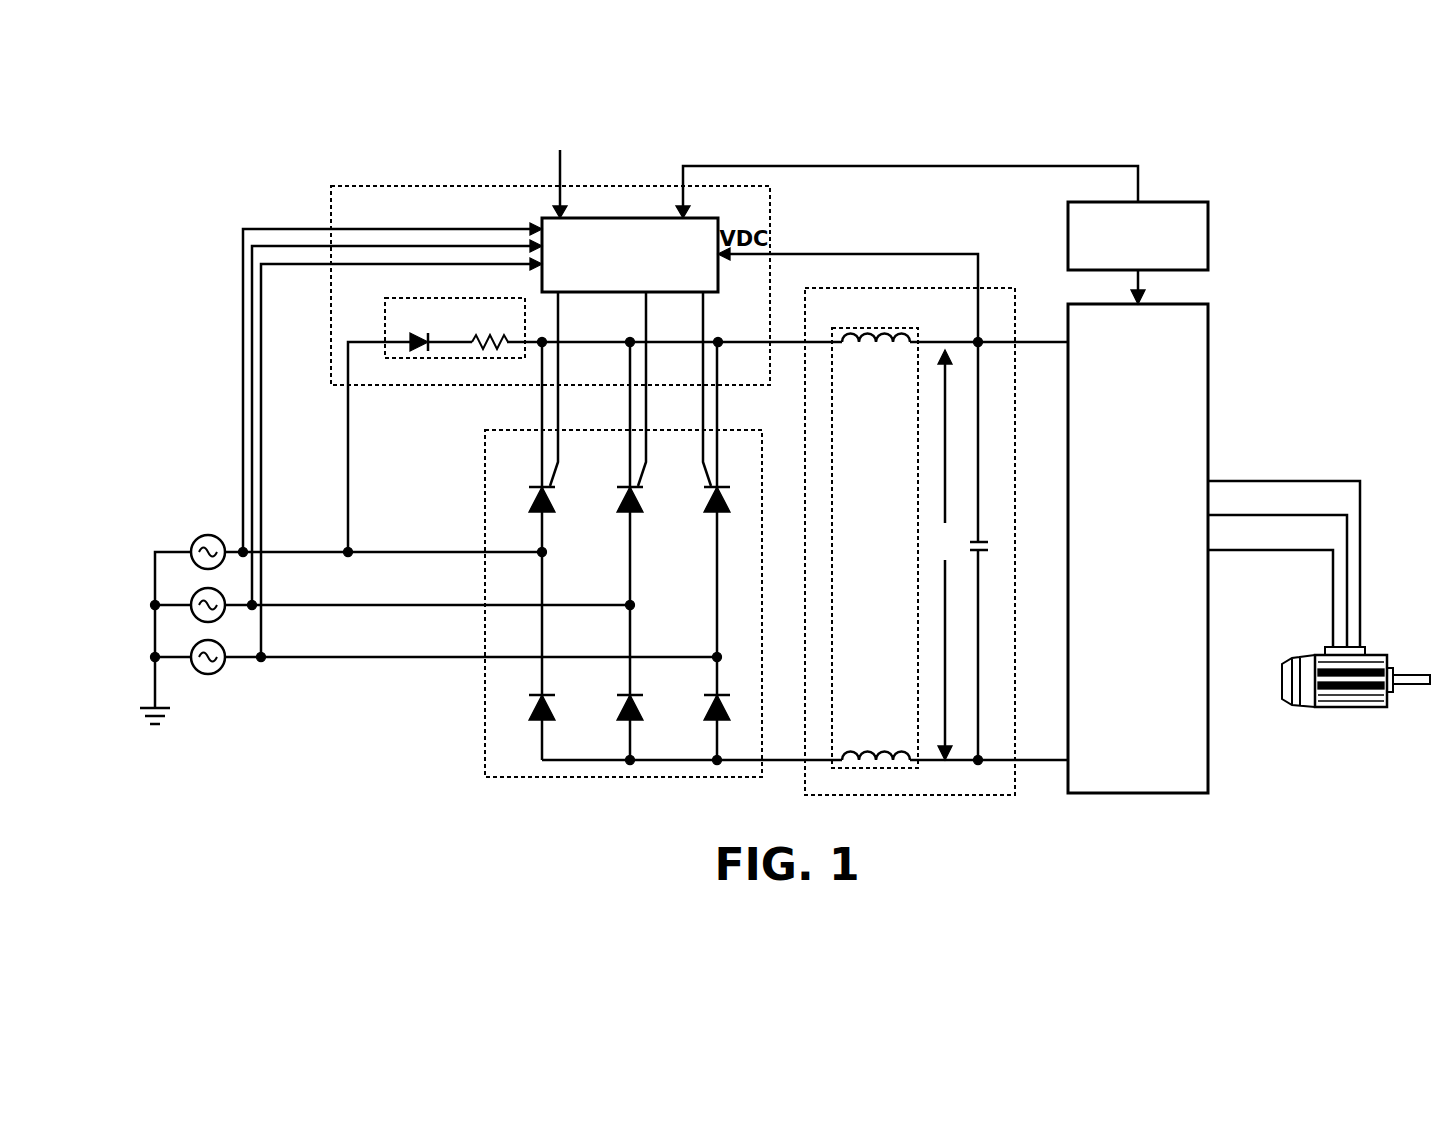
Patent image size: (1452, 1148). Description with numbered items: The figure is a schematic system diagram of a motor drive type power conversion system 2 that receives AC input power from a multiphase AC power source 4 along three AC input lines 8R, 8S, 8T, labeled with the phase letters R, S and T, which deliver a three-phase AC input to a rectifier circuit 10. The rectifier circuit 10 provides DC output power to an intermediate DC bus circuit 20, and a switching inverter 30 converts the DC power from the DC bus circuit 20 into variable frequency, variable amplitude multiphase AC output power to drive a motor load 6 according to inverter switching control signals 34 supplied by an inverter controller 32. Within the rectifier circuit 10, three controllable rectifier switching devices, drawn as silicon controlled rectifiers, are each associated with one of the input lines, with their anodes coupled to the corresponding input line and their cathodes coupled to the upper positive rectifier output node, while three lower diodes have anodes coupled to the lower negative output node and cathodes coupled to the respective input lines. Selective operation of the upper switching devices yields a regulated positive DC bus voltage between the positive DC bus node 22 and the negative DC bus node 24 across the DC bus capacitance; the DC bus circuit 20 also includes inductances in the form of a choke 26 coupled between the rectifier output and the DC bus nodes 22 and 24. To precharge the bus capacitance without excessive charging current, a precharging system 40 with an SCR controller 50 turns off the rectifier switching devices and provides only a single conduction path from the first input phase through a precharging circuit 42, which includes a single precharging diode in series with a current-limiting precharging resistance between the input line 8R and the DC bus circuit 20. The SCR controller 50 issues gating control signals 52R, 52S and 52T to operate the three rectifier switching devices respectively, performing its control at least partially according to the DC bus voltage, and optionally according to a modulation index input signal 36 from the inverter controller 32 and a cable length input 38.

The power conversion system 2 is at (216, 156).
The multiphase AC power source 4 is at (214, 510).
The motor load 6 is at (1380, 655).
The AC input line 8R is at (314, 550).
The AC input line 8S is at (314, 603).
The AC input line 8T is at (314, 655).
The rectifier circuit 10 is at (511, 428).
The intermediate DC bus circuit 20 is at (905, 287).
The DC bus node 22 is at (947, 338).
The DC bus node 24 is at (946, 764).
The choke 26 is at (878, 327).
The switching inverter 30 is at (1103, 303).
The inverter controller 32 is at (1086, 201).
The inverter switching control signals 34 is at (1143, 288).
The modulation index input signal 36 is at (724, 166).
The cable length input 38 is at (560, 169).
The precharging system 40 is at (369, 186).
The precharging circuit 42 is at (385, 310).
The SCR controller 50 is at (632, 216).
The gating control signal 52R is at (560, 323).
The gating control signal 52S is at (648, 323).
The gating control signal 52T is at (706, 323).